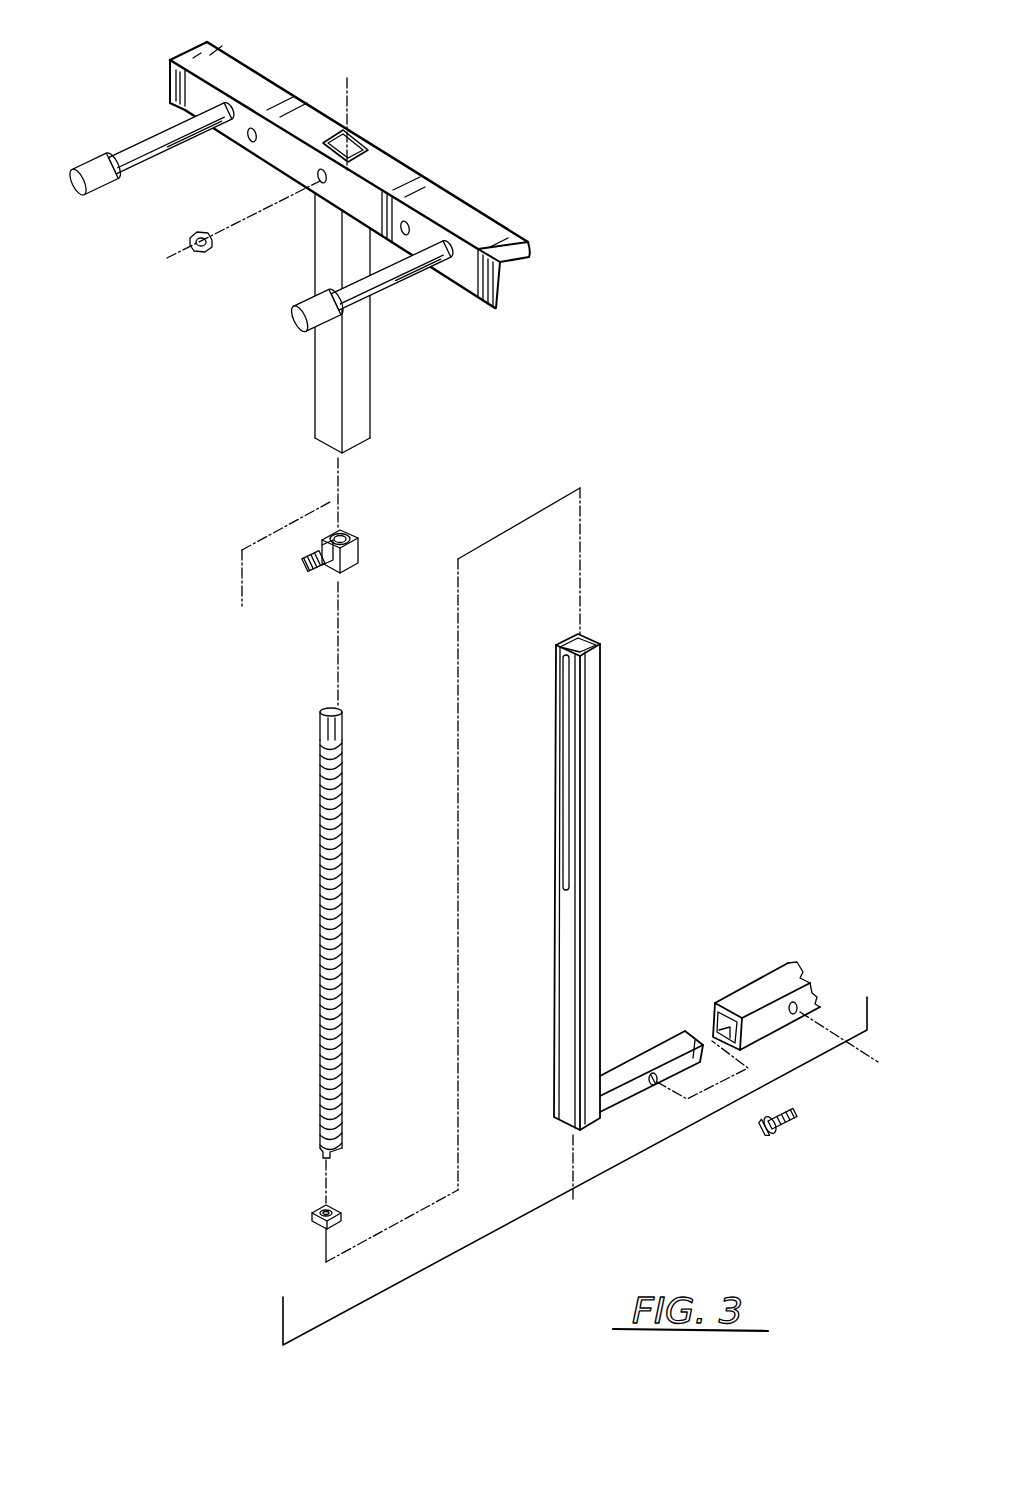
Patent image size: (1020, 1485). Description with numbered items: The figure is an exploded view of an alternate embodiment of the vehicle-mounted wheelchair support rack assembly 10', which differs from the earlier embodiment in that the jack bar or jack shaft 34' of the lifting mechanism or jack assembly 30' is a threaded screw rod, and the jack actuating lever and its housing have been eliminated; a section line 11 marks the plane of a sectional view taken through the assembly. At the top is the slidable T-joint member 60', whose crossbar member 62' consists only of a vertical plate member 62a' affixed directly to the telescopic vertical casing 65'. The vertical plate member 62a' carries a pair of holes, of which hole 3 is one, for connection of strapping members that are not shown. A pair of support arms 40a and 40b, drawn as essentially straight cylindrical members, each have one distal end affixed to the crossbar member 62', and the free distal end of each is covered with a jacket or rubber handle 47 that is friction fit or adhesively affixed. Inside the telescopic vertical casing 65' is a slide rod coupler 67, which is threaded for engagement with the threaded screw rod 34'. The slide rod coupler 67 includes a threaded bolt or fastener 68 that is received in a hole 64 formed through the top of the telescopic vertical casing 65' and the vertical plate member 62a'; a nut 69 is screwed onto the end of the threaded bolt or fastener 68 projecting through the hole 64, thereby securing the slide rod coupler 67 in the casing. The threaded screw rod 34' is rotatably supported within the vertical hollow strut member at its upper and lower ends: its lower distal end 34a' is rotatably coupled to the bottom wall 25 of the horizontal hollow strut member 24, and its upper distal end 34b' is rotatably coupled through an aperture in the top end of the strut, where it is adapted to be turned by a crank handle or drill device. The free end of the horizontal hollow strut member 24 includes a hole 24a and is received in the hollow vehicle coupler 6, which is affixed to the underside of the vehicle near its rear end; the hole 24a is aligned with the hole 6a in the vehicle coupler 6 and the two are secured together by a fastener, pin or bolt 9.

The hole 3 is at (253, 129).
The section line 11 is at (312, 13).
The support arm 40a is at (165, 146).
The jacket or rubber handle 47 is at (77, 200).
The nut 69 is at (195, 240).
The hole 64 is at (321, 183).
The vertical plate member 62a' is at (407, 170).
The crossbar member 62' is at (391, 175).
The vehicle-mounted wheelchair support rack assembly 10' is at (473, 673).
The slidable T-joint member 60' is at (341, 246).
The support arm 40b is at (351, 318).
The telescopic vertical casing 65' is at (405, 324).
The slide rod coupler 67 is at (362, 546).
The threaded bolt or fastener 68 is at (312, 570).
The upper distal end 34b' is at (380, 710).
The lifting mechanism or jack assembly 30' is at (331, 868).
The threaded screw rod 34' is at (282, 945).
The lower distal end 34a' is at (287, 1177).
The bottom wall 25 is at (602, 1103).
The horizontal hollow strut member 24 is at (662, 1038).
The hole 24a is at (655, 1086).
The vehicle coupler 6 is at (754, 998).
The hole 6a is at (797, 1010).
The fastener, pin or bolt 9 is at (770, 1135).